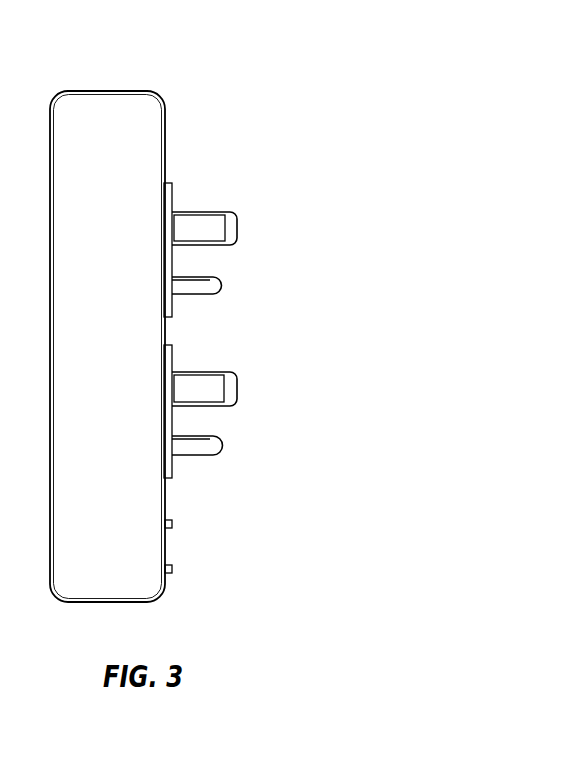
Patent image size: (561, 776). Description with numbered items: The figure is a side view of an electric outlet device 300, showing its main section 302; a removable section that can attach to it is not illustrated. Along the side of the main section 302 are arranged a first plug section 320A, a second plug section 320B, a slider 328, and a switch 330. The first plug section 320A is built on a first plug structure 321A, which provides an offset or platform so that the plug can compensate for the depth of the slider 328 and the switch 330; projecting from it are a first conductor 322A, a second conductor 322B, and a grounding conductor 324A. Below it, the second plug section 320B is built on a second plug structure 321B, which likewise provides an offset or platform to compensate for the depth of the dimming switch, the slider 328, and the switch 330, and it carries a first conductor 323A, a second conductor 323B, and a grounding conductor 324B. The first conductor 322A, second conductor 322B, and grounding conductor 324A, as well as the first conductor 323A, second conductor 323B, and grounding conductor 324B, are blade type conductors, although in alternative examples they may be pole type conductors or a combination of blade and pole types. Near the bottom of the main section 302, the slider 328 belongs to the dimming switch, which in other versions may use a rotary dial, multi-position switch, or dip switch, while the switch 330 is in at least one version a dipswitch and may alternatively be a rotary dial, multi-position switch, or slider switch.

The electric outlet device 300 is at (285, 66).
The main section 302 is at (108, 90).
The first plug section 320A is at (271, 160).
The second plug section 320B is at (245, 490).
The first plug structure 321A is at (168, 183).
The second plug structure 321B is at (168, 345).
The first conductor 322A is at (197, 215).
The second conductor 322B is at (237, 230).
The first conductor 323A is at (194, 402).
The second conductor 323B is at (237, 388).
The grounding conductor 324A is at (222, 287).
The grounding conductor 324B is at (222, 446).
The slider 328 is at (172, 524).
The switch 330 is at (172, 569).